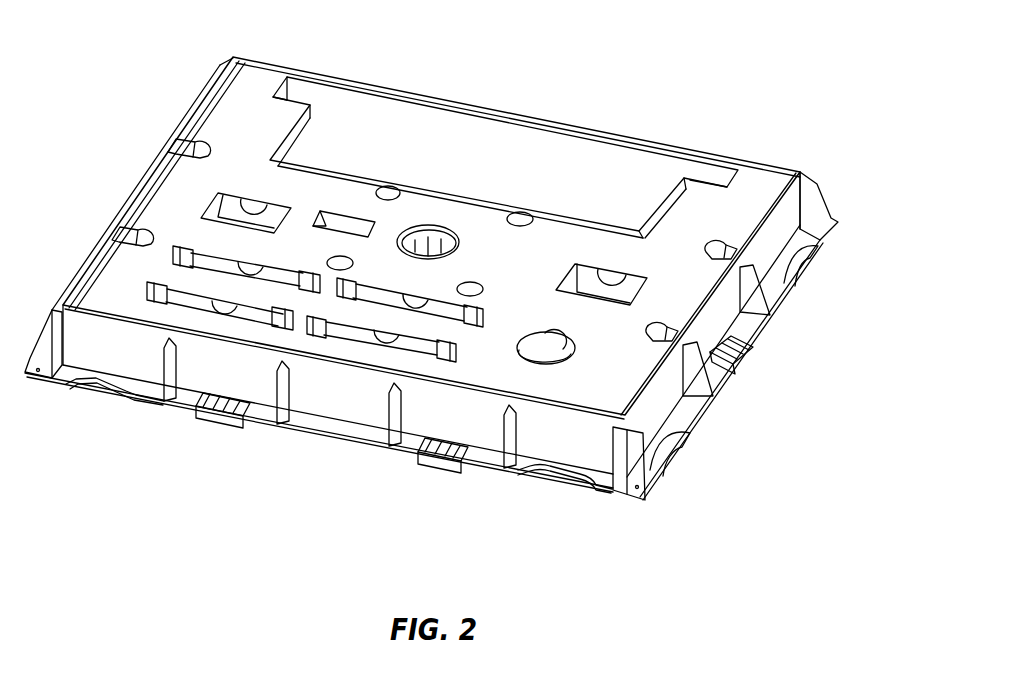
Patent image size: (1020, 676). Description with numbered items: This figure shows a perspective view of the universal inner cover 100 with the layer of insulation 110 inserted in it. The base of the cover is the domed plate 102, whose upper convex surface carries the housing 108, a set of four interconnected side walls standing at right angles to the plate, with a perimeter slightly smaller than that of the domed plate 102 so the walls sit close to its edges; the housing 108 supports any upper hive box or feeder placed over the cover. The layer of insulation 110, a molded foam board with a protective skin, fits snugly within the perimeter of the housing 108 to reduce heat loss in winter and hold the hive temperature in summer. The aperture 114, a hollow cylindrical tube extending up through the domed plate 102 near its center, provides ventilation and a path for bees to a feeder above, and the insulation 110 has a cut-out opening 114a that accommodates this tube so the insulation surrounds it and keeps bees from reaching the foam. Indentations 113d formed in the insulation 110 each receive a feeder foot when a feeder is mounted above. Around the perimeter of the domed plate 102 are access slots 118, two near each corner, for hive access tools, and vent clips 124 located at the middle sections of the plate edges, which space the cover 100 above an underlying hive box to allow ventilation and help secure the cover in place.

The universal inner cover 100 is at (745, 404).
The domed plate 102 is at (343, 443).
The housing 108 is at (577, 438).
The layer of insulation 110 is at (253, 77).
The indentation 113d is at (336, 256).
The aperture 114 is at (433, 243).
The cut-out opening 114a is at (437, 237).
The access slot 118 is at (808, 263).
The vent clip 124 is at (222, 407).